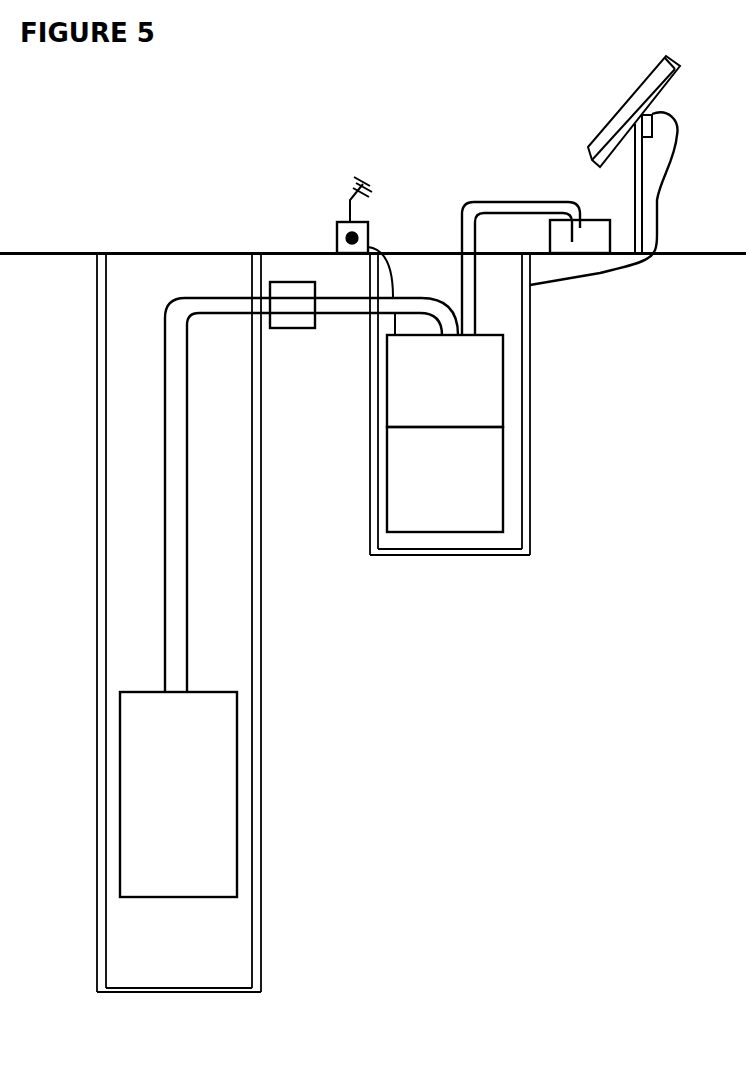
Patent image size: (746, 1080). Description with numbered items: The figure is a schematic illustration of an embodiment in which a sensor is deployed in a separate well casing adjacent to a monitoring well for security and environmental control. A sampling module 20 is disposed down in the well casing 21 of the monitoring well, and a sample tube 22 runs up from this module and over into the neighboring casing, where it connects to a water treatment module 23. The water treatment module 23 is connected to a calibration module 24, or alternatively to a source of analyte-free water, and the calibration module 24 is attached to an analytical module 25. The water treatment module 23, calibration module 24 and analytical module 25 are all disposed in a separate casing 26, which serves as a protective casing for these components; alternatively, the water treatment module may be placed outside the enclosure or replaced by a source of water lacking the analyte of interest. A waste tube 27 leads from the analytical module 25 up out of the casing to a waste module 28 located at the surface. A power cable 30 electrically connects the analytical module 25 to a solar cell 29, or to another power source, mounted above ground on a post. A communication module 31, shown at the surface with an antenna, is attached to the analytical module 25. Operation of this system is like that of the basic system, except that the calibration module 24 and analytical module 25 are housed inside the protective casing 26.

The sampling module 20 is at (190, 812).
The well casing 21 is at (259, 798).
The sample tube 22 is at (189, 585).
The water treatment module 23 is at (315, 328).
The calibration module 24 is at (461, 396).
The analytical module 25 is at (457, 491).
The separate casing 26 is at (469, 404).
The waste tube 27 is at (485, 201).
The waste module 28 is at (613, 208).
The solar cell 29 is at (658, 60).
The power cable 30 is at (632, 270).
The communication module 31 is at (337, 216).